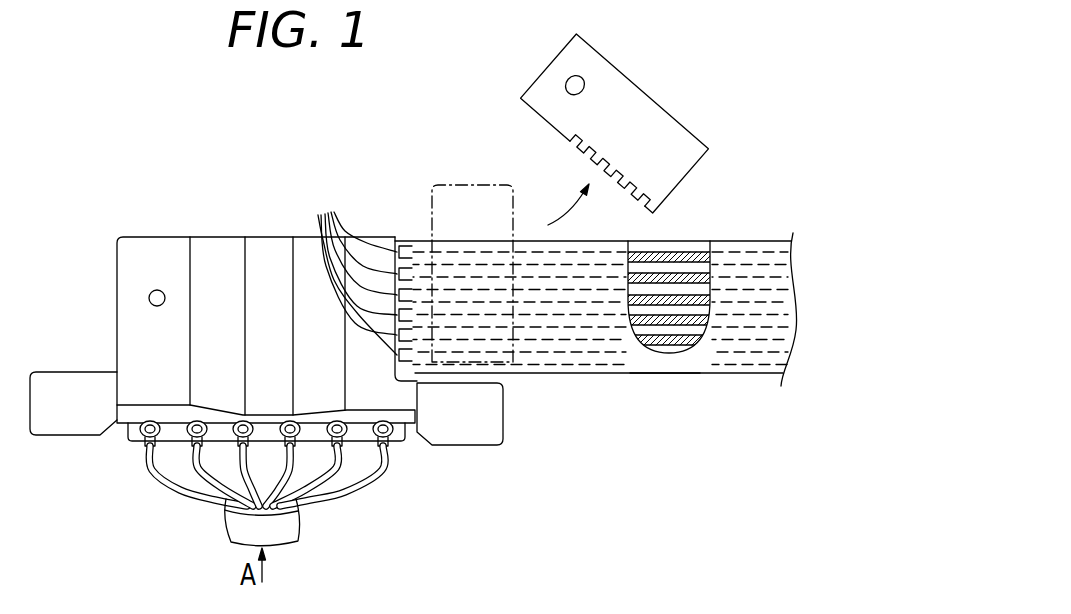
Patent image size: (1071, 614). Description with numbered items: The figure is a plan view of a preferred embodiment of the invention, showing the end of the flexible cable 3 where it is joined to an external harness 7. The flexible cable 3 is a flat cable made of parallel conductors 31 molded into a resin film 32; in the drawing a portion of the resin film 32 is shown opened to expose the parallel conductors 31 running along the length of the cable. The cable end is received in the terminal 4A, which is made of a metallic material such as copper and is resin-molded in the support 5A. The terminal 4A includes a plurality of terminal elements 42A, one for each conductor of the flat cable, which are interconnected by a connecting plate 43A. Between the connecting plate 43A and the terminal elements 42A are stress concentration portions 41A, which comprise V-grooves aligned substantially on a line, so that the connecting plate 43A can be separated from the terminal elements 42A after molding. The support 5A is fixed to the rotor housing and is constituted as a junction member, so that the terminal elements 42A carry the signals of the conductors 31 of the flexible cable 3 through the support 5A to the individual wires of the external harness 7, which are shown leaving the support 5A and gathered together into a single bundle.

The support 5A is at (152, 247).
The terminal elements 42A is at (346, 267).
The stress concentration portions 41A is at (567, 148).
The connecting plates 43A is at (635, 103).
The conductors 31 is at (688, 290).
The resin film 32 is at (652, 362).
The flexible cable 3 is at (591, 388).
The terminal 4A is at (407, 392).
The external harness 7 is at (300, 523).